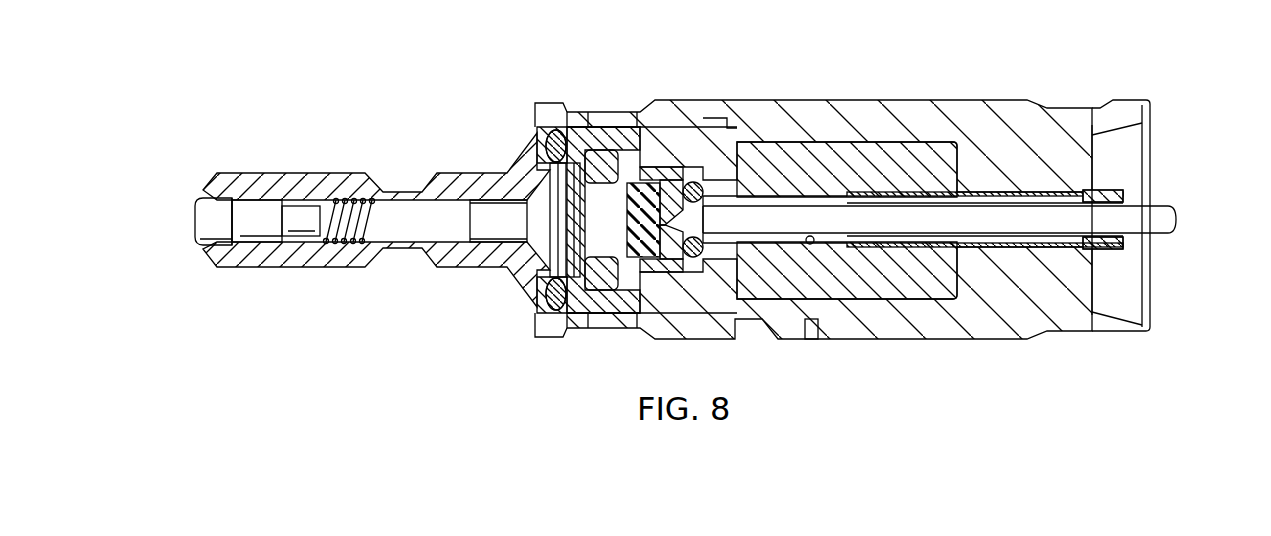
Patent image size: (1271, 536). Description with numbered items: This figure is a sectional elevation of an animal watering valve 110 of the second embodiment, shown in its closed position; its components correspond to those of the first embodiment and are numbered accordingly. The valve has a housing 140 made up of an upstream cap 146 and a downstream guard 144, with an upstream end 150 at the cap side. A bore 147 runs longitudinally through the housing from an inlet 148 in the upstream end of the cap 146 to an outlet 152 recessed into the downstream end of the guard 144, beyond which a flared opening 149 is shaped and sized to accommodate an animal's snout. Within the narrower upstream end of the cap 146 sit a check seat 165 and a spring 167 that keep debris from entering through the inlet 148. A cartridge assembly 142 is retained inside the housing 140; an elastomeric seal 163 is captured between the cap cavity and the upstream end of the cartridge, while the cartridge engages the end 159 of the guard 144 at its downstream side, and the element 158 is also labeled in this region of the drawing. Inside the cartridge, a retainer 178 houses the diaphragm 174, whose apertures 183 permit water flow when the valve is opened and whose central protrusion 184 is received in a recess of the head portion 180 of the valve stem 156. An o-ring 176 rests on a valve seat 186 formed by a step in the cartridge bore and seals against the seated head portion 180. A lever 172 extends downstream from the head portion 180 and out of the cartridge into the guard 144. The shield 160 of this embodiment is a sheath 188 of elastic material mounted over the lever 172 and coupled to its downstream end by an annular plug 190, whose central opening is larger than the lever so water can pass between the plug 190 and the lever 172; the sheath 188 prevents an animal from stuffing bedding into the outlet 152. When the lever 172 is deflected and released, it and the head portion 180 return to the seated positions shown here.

The valve 110 is at (970, 70).
The housing 140 is at (992, 341).
The cartridge assembly 142 is at (890, 115).
The guard 144 is at (1007, 108).
The cap 146 is at (570, 112).
The bore 147 is at (810, 244).
The inlet 148 is at (190, 250).
The flared opening 149 is at (1162, 125).
The upstream end 150 is at (190, 190).
The outlet 152 is at (1062, 260).
The valve stem 156 is at (908, 240).
The bore 158 is at (672, 115).
The end 159 is at (810, 115).
The shield 160 is at (1095, 252).
The seal 163 is at (540, 135).
The check seat 165 is at (263, 207).
The spring 167 is at (340, 190).
The lever 172 is at (1170, 206).
The diaphragm 174 is at (635, 112).
The o-ring 176 is at (773, 115).
The retainer 178 is at (597, 112).
The head portion 180 is at (722, 115).
The apertures 183 is at (693, 115).
The central protrusion 184 is at (637, 307).
The valve seat 186 is at (698, 307).
The sheath 188 is at (1093, 118).
The annular plug 190 is at (1125, 246).